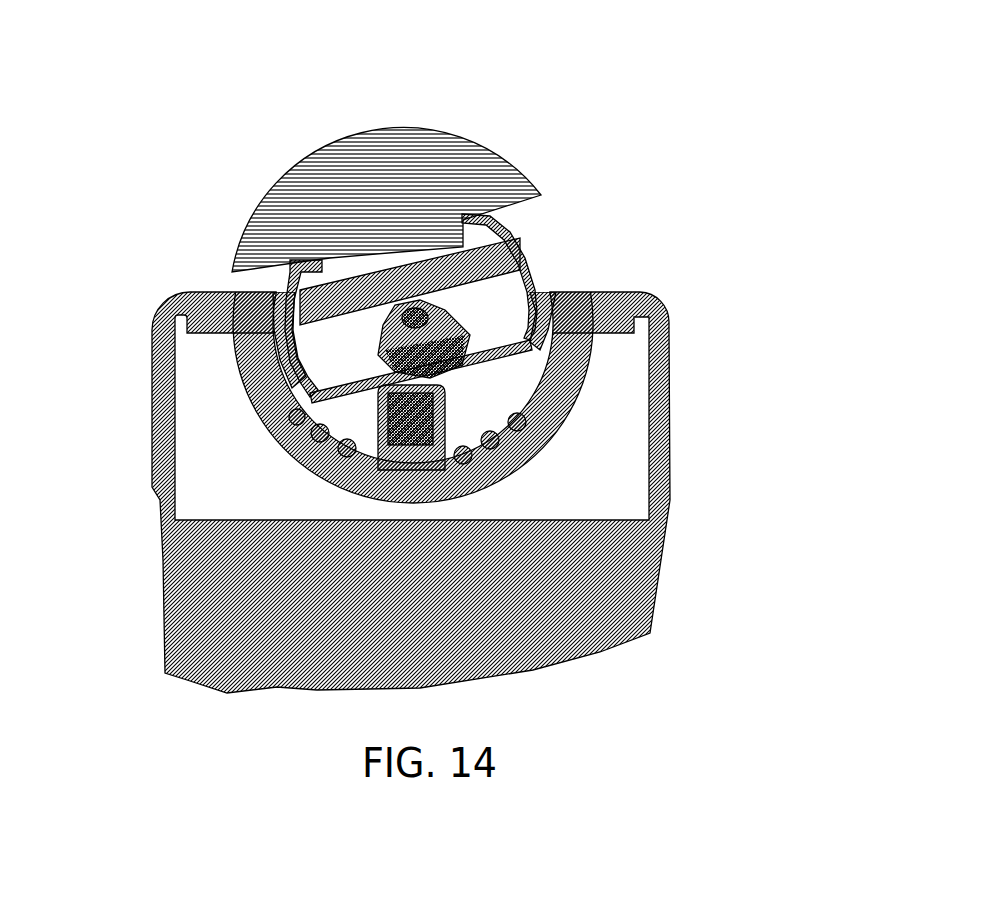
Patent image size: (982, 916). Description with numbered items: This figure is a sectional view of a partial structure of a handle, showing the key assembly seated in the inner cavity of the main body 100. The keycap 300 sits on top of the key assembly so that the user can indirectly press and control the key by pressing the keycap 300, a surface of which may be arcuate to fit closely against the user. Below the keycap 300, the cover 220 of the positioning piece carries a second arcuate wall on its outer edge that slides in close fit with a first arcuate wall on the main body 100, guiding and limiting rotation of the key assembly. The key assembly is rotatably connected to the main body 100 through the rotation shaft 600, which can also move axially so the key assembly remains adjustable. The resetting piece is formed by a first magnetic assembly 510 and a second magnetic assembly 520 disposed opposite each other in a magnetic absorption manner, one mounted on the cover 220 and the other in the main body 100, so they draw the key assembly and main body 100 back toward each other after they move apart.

The main body 100 is at (665, 480).
The cover 220 is at (540, 290).
The keycap 300 is at (445, 160).
The first magnetic assembly 510 is at (372, 354).
The second magnetic assembly 520 is at (385, 420).
The rotation shaft 600 is at (413, 316).